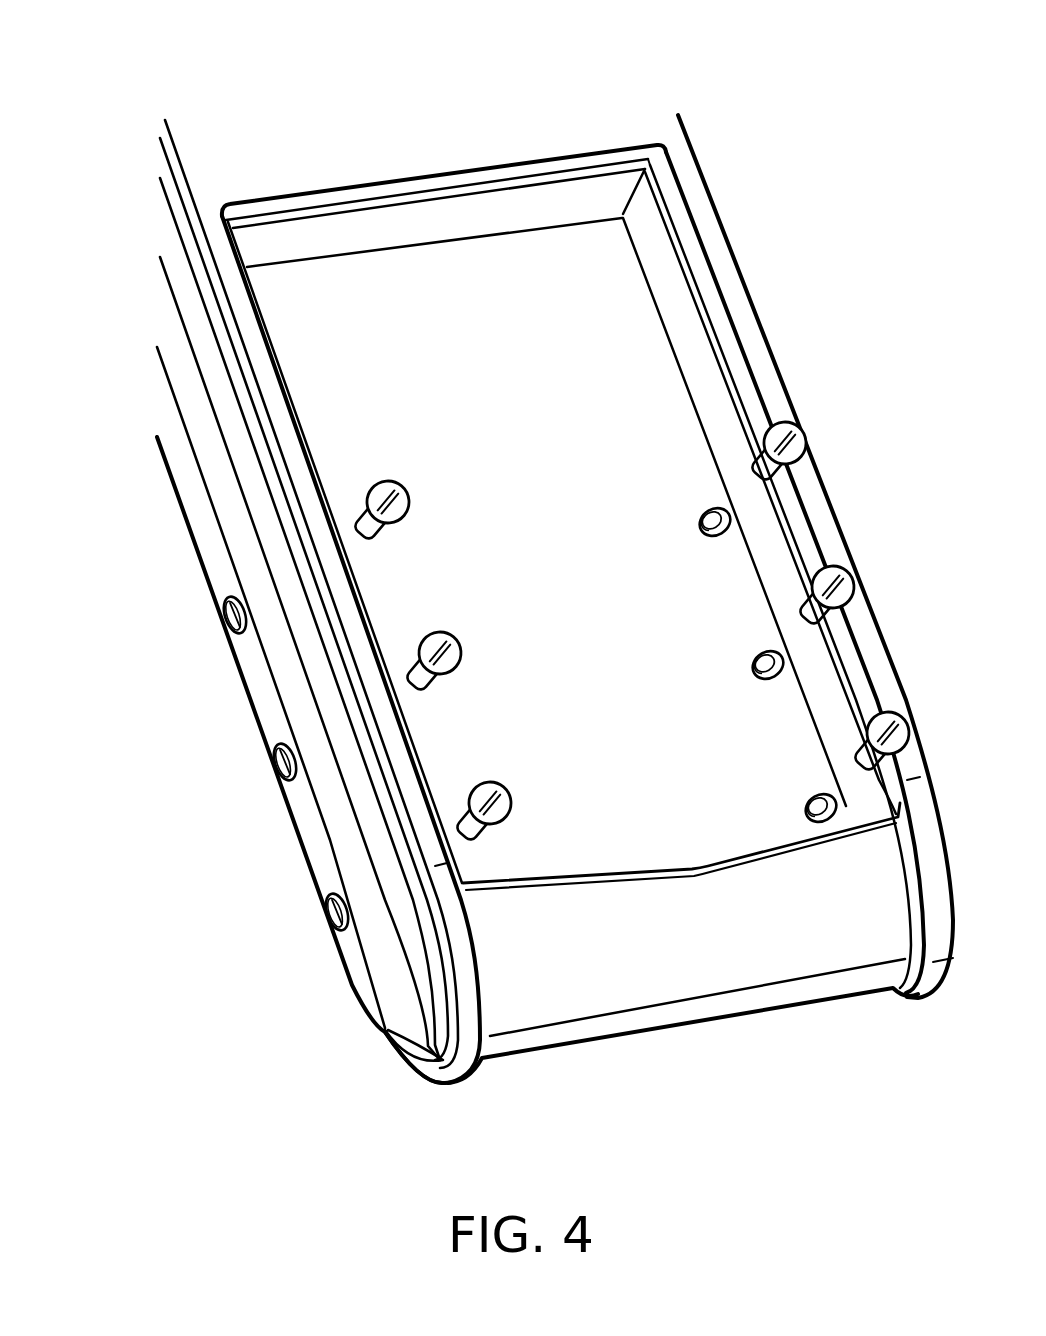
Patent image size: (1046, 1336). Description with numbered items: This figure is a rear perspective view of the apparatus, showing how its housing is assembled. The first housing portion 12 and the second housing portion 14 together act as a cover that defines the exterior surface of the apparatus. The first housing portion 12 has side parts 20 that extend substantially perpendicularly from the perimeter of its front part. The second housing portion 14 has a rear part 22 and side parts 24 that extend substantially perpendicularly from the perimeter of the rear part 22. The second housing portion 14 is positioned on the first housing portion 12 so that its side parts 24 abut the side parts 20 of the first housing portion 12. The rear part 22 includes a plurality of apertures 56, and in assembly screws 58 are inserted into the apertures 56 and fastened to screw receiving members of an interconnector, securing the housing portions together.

The first housing portion 12 is at (388, 1058).
The second housing portion 14 is at (589, 122).
The side parts 20 is at (360, 965).
The rear part 22 is at (566, 444).
The side parts 24 is at (167, 236).
The apertures 56 is at (787, 808).
The screws 58 is at (797, 442).